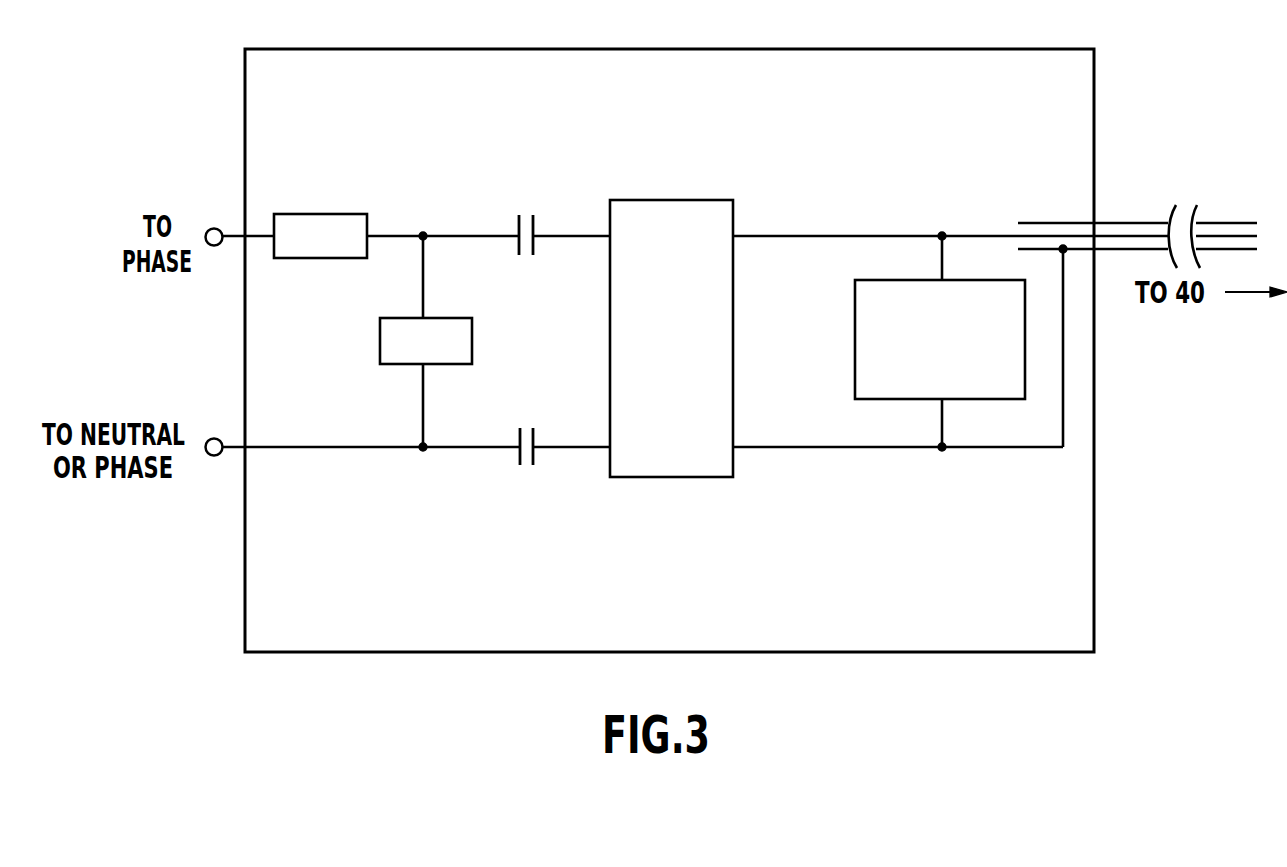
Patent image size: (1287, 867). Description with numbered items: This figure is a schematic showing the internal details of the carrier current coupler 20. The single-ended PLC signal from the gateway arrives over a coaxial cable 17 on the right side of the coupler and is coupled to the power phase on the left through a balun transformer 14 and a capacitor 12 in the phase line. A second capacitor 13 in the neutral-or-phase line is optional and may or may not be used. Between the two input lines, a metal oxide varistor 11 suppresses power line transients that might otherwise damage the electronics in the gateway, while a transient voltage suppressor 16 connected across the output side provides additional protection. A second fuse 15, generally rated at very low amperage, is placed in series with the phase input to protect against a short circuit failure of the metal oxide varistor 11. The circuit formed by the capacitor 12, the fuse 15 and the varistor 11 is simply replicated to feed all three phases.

The carrier current coupler 20 is at (325, 653).
The second fuse 15 is at (300, 214).
The metal oxide varistor 11 is at (380, 340).
The capacitor 12 is at (527, 212).
The capacitor 13 is at (527, 470).
The balun transformer 14 is at (653, 200).
The transient voltage suppressor 16 is at (855, 343).
The coaxial cable 17 is at (1140, 215).